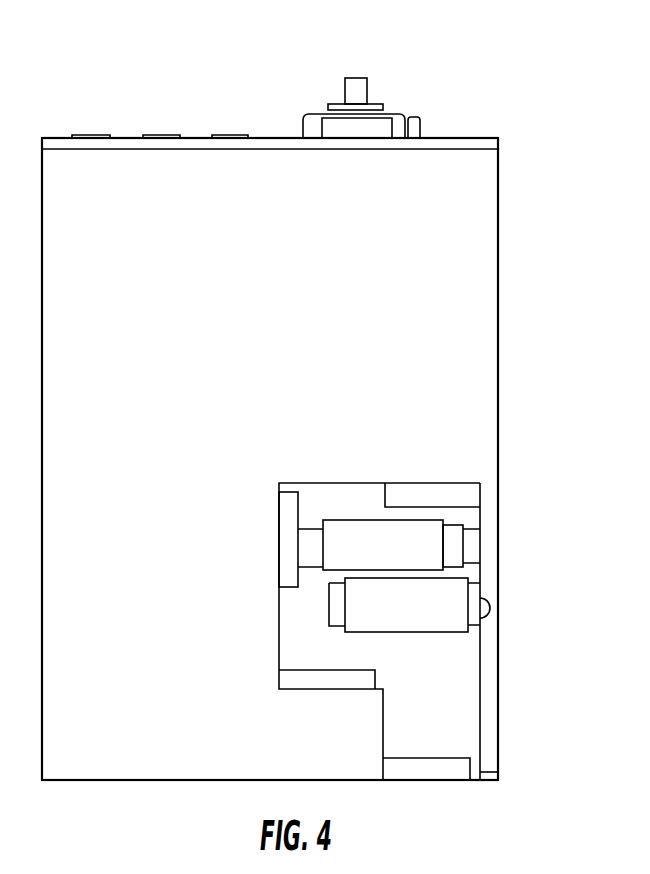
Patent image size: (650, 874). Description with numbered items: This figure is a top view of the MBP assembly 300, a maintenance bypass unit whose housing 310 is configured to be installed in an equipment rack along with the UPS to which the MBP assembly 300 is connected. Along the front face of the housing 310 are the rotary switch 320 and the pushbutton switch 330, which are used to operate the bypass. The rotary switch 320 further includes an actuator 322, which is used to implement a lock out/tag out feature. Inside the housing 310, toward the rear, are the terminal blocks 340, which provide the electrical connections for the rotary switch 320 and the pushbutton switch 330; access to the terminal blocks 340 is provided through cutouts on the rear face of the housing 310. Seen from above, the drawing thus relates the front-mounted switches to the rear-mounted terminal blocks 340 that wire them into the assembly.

The MBP assembly 300 is at (115, 112).
The housing 310 is at (499, 190).
The rotary switch 320 is at (367, 88).
The actuator 322 is at (332, 128).
The pushbutton switch 330 is at (411, 117).
The terminal blocks 340 is at (455, 517).